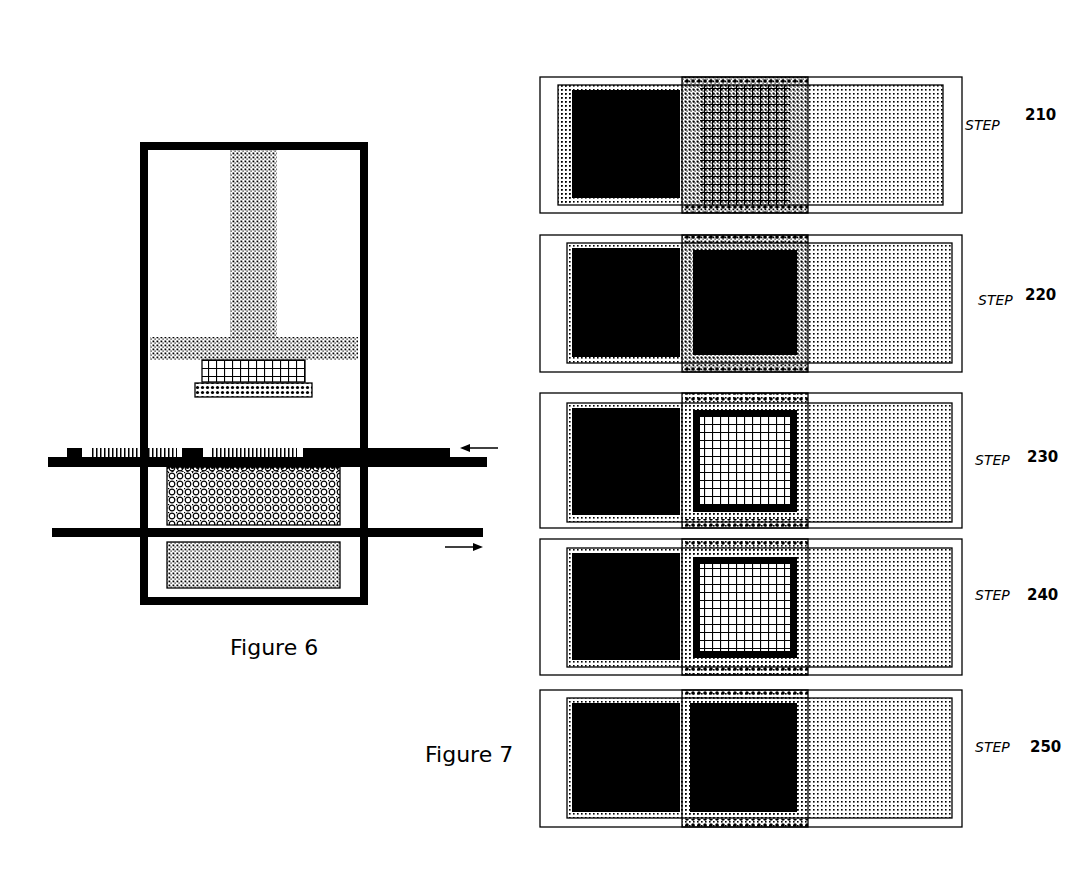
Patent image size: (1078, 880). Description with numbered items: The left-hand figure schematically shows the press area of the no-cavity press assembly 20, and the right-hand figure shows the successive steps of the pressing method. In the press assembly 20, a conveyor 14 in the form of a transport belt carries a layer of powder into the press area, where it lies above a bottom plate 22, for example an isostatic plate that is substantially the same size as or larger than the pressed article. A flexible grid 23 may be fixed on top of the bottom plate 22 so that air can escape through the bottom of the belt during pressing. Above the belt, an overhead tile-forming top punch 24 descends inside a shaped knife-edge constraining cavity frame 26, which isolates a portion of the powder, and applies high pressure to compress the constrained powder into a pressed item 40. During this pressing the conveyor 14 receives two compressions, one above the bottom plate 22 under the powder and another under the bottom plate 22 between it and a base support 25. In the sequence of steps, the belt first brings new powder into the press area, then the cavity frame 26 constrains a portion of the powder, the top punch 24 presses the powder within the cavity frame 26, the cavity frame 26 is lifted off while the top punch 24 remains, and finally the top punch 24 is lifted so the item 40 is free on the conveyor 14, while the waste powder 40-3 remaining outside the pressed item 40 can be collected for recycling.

In FIG. 6, the conveyor 14 is at (462, 468).
In FIG. 7, the conveyor 14 is at (547, 95).
In FIG. 6, the no-cavity press assembly 20 is at (398, 238).
In FIG. 6, the bottom plate 22 is at (167, 483).
In FIG. 7, the bottom plate 22 is at (772, 75).
In FIG. 6, the flexible grid 23 is at (342, 473).
In FIG. 7, the flexible grid 23 is at (730, 75).
In FIG. 6, the top punch 24 is at (330, 367).
In FIG. 7, the top punch 24 is at (768, 443).
In FIG. 6, the base support 25 is at (183, 555).
In FIG. 6, the knife-edge constraining cavity frame 26 is at (323, 393).
In FIG. 7, the knife-edge constraining cavity frame 26 is at (803, 278).
In FIG. 6, the pressed item 40 is at (128, 443).
In FIG. 7, the pressed item 40 is at (650, 107).
In FIG. 7, the waste powder 40-3 is at (563, 138).